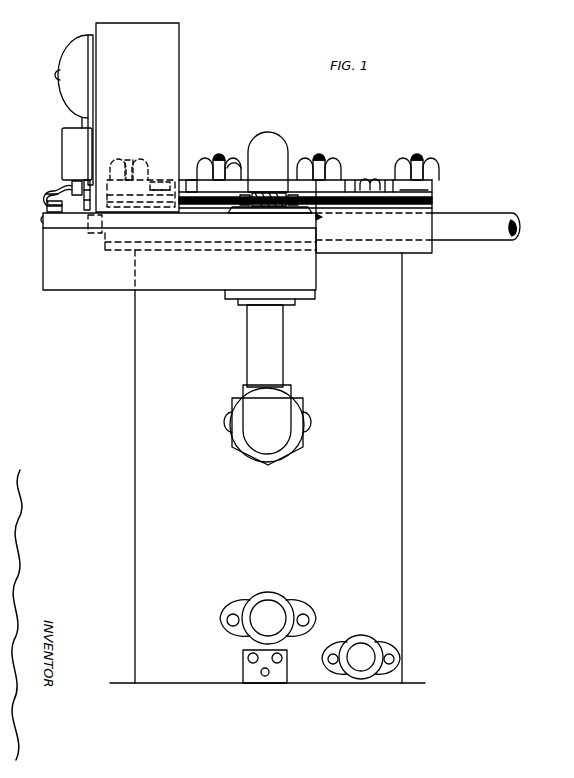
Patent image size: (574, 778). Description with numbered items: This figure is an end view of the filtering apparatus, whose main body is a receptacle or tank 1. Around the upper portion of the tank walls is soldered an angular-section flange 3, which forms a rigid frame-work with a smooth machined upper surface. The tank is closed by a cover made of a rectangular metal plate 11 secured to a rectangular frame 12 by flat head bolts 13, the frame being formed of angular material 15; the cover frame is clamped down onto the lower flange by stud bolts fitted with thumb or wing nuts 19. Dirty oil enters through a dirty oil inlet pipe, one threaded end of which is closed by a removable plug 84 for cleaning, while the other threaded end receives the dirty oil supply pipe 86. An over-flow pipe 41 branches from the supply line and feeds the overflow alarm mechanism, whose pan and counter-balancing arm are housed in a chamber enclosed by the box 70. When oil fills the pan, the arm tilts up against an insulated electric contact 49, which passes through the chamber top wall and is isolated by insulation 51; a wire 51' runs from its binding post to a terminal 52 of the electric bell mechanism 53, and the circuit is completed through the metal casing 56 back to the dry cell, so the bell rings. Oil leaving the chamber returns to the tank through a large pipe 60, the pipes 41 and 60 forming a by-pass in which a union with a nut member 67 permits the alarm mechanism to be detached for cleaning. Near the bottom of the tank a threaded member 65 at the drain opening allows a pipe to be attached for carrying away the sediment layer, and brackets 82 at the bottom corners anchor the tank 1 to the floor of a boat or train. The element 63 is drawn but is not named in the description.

The tank 1 is at (388, 416).
The flange 3 is at (425, 252).
The rectangular metal plate 11 is at (430, 198).
The rectangular frame 12 is at (340, 187).
The flat head bolts 13 is at (372, 181).
The angular material 15 is at (202, 170).
The wing nuts 19 is at (305, 170).
The over-flow pipe 41 is at (277, 146).
The electric contact 49 is at (80, 210).
The insulation 51 is at (34, 211).
The wire 51' is at (31, 190).
The terminal 52 is at (72, 186).
The electric bell mechanism 53 is at (70, 145).
The metal casing 56 is at (180, 113).
The pipe 60 is at (280, 363).
The flange 63 is at (285, 602).
The threaded member 65 is at (370, 651).
The nut member 67 is at (302, 413).
The box 70 is at (80, 288).
The brackets 82 is at (281, 681).
The plug 84 is at (92, 236).
The dirty oil supply pipe 86 is at (498, 223).